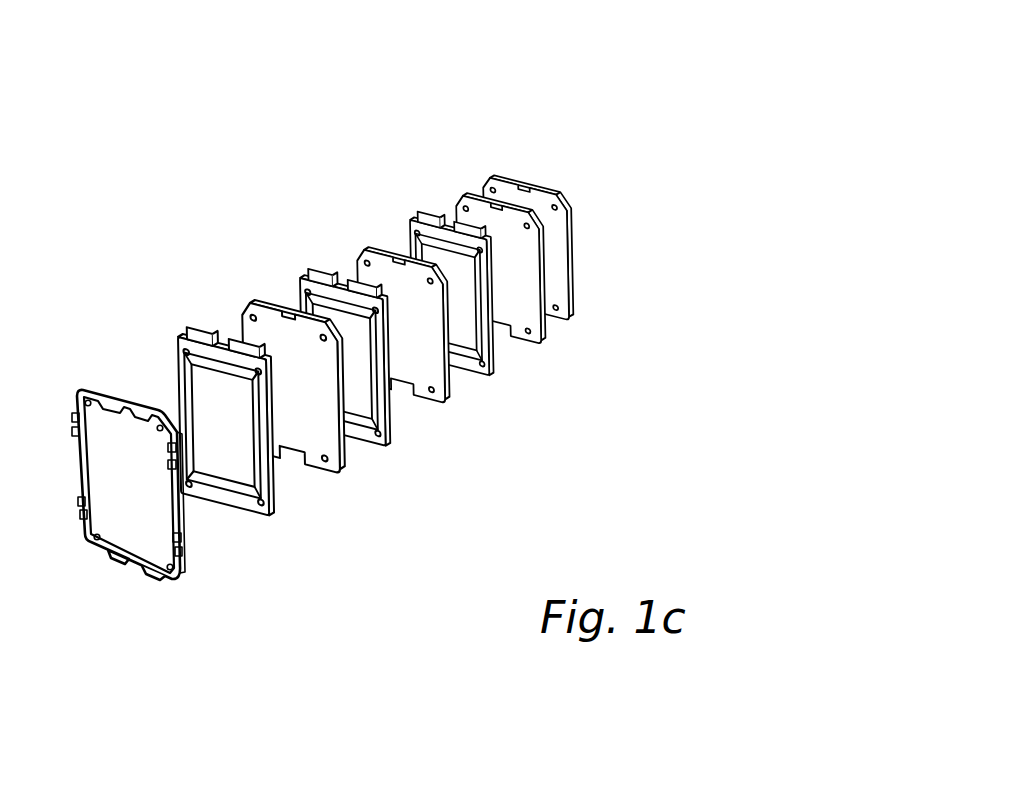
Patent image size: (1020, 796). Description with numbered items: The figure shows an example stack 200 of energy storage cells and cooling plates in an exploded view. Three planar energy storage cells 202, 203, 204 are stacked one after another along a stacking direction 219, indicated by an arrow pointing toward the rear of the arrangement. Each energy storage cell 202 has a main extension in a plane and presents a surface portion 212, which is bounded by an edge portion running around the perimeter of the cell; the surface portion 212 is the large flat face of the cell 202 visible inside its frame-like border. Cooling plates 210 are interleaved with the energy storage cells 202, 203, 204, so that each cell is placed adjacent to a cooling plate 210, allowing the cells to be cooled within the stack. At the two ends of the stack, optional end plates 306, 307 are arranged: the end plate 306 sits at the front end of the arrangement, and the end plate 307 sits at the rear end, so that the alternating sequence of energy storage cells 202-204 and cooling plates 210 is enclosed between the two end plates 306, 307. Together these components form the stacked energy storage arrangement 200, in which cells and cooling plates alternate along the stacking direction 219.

The electrochemical cell stack 200 is at (375, 321).
The stacking direction 219 is at (592, 150).
The energy storage cell 202 is at (177, 383).
The energy storage cell 203 is at (297, 283).
The energy storage cell 204 is at (400, 226).
The cooling plate 210 is at (518, 293).
The surface portion 212 is at (225, 393).
The end plate 306 is at (190, 528).
The end plate 307 is at (566, 304).